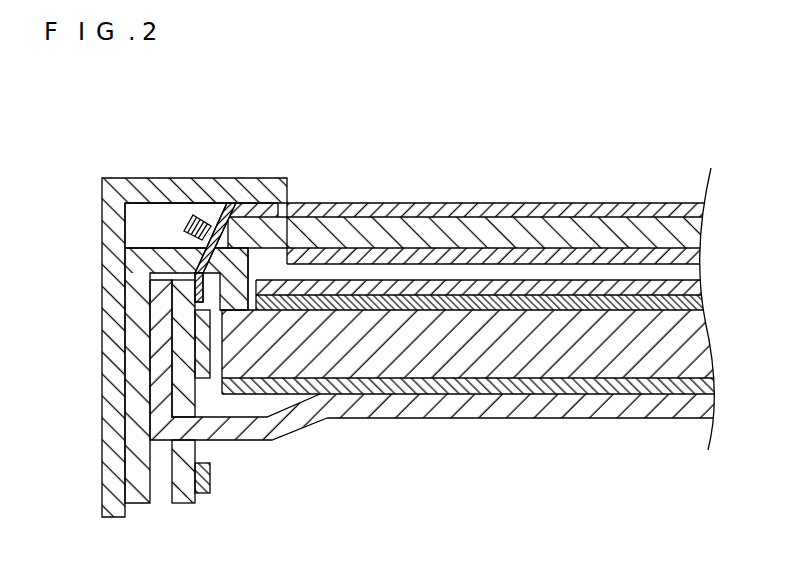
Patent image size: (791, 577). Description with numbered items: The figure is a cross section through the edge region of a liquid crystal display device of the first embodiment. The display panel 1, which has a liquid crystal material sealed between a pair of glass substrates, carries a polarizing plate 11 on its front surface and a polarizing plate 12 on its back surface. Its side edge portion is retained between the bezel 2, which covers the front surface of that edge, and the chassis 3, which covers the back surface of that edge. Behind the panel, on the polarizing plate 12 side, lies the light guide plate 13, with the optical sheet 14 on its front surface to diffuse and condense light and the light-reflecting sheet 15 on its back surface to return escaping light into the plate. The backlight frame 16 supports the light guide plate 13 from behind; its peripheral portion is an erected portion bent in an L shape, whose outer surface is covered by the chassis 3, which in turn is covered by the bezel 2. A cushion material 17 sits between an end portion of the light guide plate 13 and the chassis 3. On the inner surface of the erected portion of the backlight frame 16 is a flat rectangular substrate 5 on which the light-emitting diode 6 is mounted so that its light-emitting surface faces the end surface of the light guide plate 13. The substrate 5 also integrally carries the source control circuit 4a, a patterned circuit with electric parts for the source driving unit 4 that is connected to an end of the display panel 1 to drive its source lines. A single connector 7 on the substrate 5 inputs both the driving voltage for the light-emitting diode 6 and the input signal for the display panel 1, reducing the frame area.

The display panel 1 is at (405, 237).
The bezel 2 is at (147, 178).
The chassis 3 is at (162, 250).
The source driving unit 4 is at (190, 216).
The source control circuit 4a is at (199, 301).
The substrate 5 is at (183, 488).
The light-emitting diode 6 is at (205, 372).
The connector 7 is at (203, 493).
The polarizing plate 11 is at (445, 207).
The polarizing plate 12 is at (352, 253).
The light guide plate 13 is at (510, 370).
The optical sheet 14 is at (573, 287).
The light-reflecting sheet 15 is at (598, 392).
The backlight frame 16 is at (293, 425).
The cushion material 17 is at (248, 278).